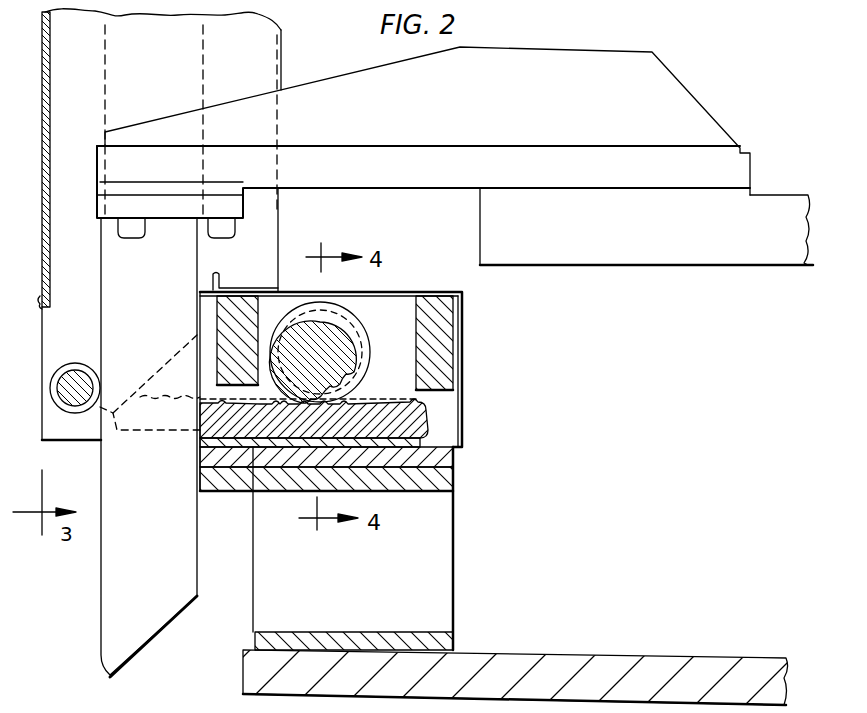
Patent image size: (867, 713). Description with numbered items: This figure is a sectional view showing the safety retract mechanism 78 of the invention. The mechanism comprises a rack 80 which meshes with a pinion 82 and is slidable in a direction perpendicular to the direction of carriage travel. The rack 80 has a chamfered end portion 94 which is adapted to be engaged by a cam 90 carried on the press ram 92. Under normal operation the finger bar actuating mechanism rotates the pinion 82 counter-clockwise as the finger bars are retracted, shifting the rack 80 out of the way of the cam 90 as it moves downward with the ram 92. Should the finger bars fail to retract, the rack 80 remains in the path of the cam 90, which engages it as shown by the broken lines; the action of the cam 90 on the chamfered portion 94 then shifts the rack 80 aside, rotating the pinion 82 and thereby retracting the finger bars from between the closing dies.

The safety retract mechanism 78 is at (470, 459).
The rack 80 is at (417, 423).
The pinion 82 is at (335, 330).
The cam 90 is at (108, 580).
The press ram 92 is at (627, 240).
The chamfered end portion 94 is at (226, 440).